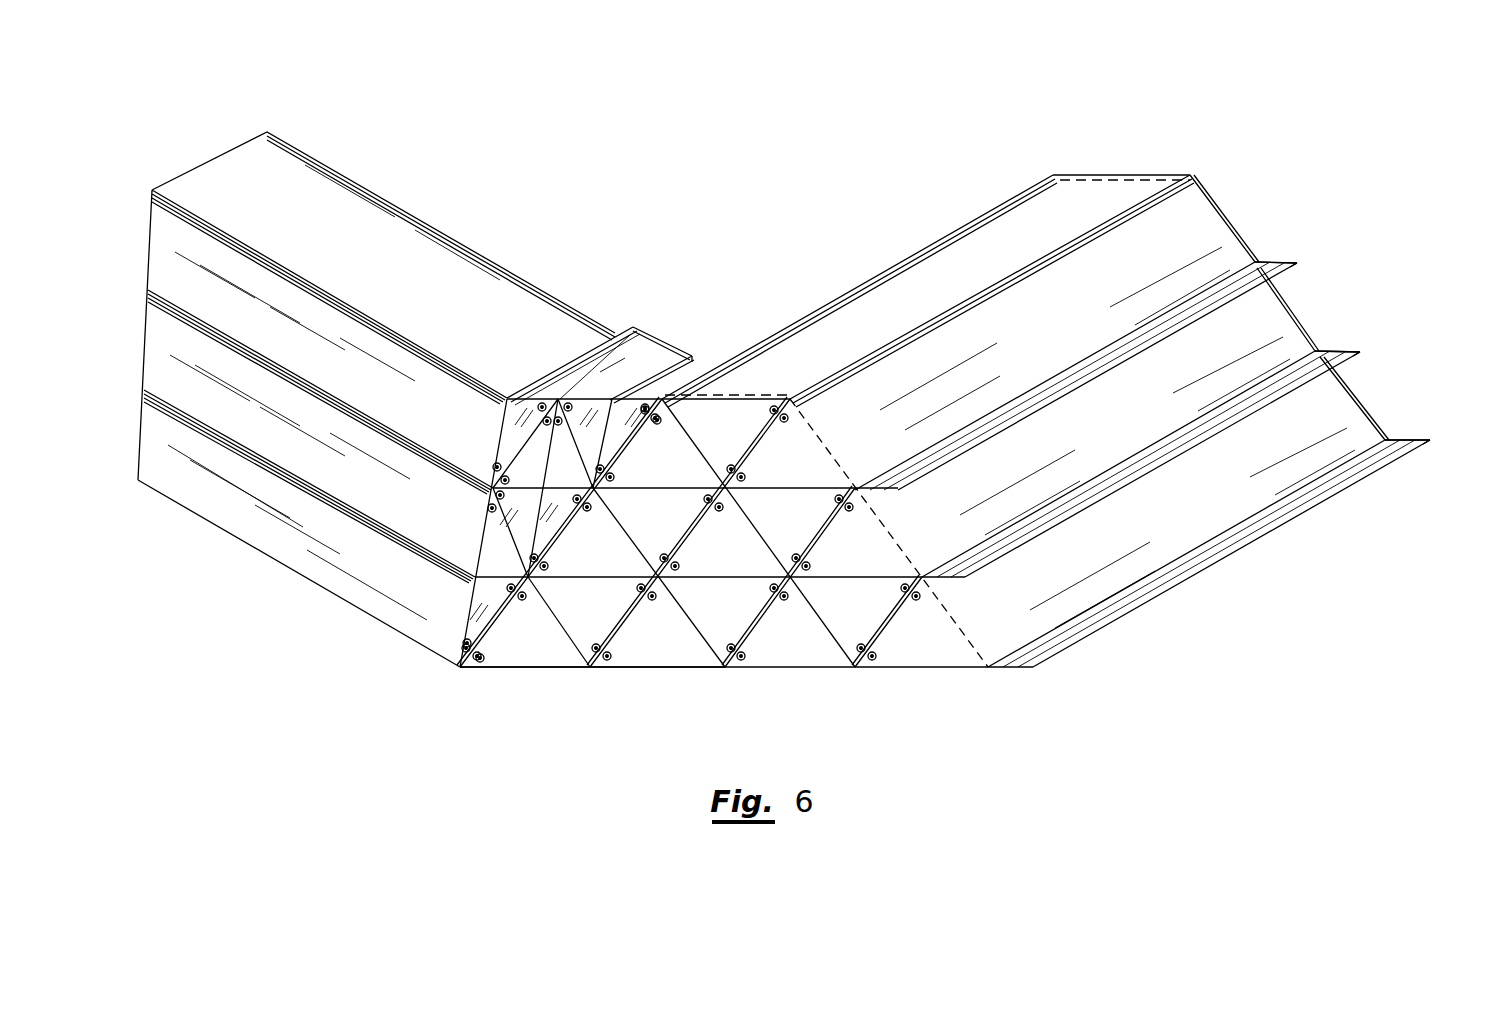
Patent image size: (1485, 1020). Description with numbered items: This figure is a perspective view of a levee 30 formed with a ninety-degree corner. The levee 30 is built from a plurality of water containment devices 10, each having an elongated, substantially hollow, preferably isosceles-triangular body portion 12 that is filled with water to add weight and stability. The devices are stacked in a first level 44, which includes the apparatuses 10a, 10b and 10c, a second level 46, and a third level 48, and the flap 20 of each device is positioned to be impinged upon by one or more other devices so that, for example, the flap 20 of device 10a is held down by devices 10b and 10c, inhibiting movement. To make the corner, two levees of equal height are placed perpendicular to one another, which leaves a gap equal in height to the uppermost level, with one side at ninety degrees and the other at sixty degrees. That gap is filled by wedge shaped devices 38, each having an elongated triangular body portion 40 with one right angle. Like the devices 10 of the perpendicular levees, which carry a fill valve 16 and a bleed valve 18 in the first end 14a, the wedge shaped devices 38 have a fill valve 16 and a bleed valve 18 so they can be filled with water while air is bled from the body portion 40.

The water containment device 10 is at (1162, 140).
The body portion 12 is at (1208, 213).
The first end 14a is at (943, 668).
The fill valve 16 is at (645, 405).
The bleed valve 18 is at (562, 398).
The flap 20 is at (1090, 381).
The levee 30 is at (856, 248).
The wedge shaped device 38 is at (684, 286).
The body portion 40 is at (690, 365).
The first level 44 is at (1409, 416).
The second level 46 is at (1345, 326).
The third level 48 is at (1283, 236).
The water containment device 10a is at (525, 667).
The water containment device 10b is at (652, 663).
The water containment device 10c is at (581, 667).